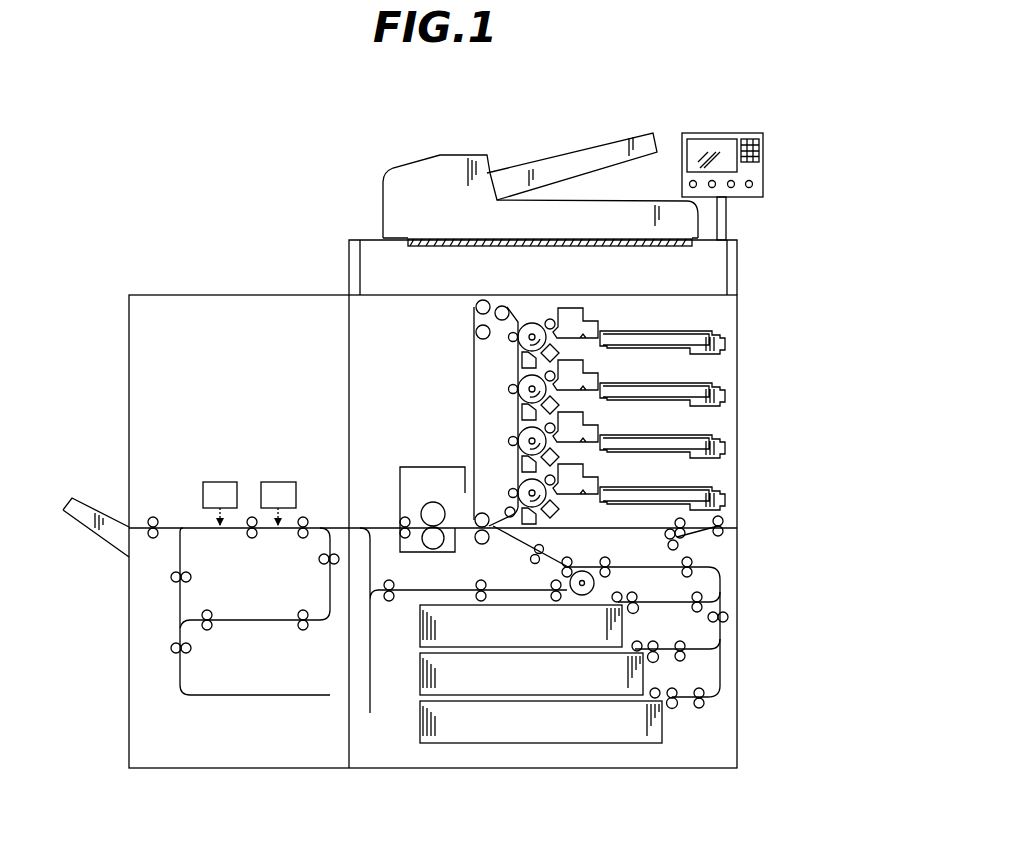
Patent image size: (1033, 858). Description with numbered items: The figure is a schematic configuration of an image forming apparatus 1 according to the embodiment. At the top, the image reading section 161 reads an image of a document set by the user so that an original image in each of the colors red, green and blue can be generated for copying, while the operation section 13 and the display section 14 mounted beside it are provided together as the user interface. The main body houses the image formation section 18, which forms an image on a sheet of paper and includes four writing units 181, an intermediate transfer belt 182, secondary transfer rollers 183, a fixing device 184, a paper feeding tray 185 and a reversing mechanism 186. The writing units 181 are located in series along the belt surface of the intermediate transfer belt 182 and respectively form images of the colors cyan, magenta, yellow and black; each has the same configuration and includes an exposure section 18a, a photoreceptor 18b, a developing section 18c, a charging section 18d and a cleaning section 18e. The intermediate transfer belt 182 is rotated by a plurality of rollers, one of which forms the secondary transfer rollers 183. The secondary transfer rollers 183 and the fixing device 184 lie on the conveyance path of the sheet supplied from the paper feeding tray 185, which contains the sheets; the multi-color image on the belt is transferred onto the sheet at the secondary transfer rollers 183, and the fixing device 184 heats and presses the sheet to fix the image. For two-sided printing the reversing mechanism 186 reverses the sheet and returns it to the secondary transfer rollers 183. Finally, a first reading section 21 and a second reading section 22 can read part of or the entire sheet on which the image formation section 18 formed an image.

The image forming apparatus 1 is at (626, 106).
The operation section 13 is at (755, 166).
The display section 14 is at (701, 149).
The image reading section 161 is at (381, 253).
The image formation section 18 is at (409, 355).
The exposure section 18a is at (654, 332).
The photoreceptor 18b is at (527, 322).
The developing section 18c is at (604, 322).
The charging section 18d is at (560, 354).
The cleaning section 18e is at (519, 358).
The writing units 181 is at (747, 343).
The intermediate transfer belt 182 is at (474, 356).
The secondary transfer rollers 183 is at (484, 522).
The fixing device 184 is at (414, 466).
The paper feeding tray 185 is at (494, 745).
The reversing mechanism 186 is at (374, 657).
The first reading section 21 is at (284, 481).
The second reading section 22 is at (226, 481).